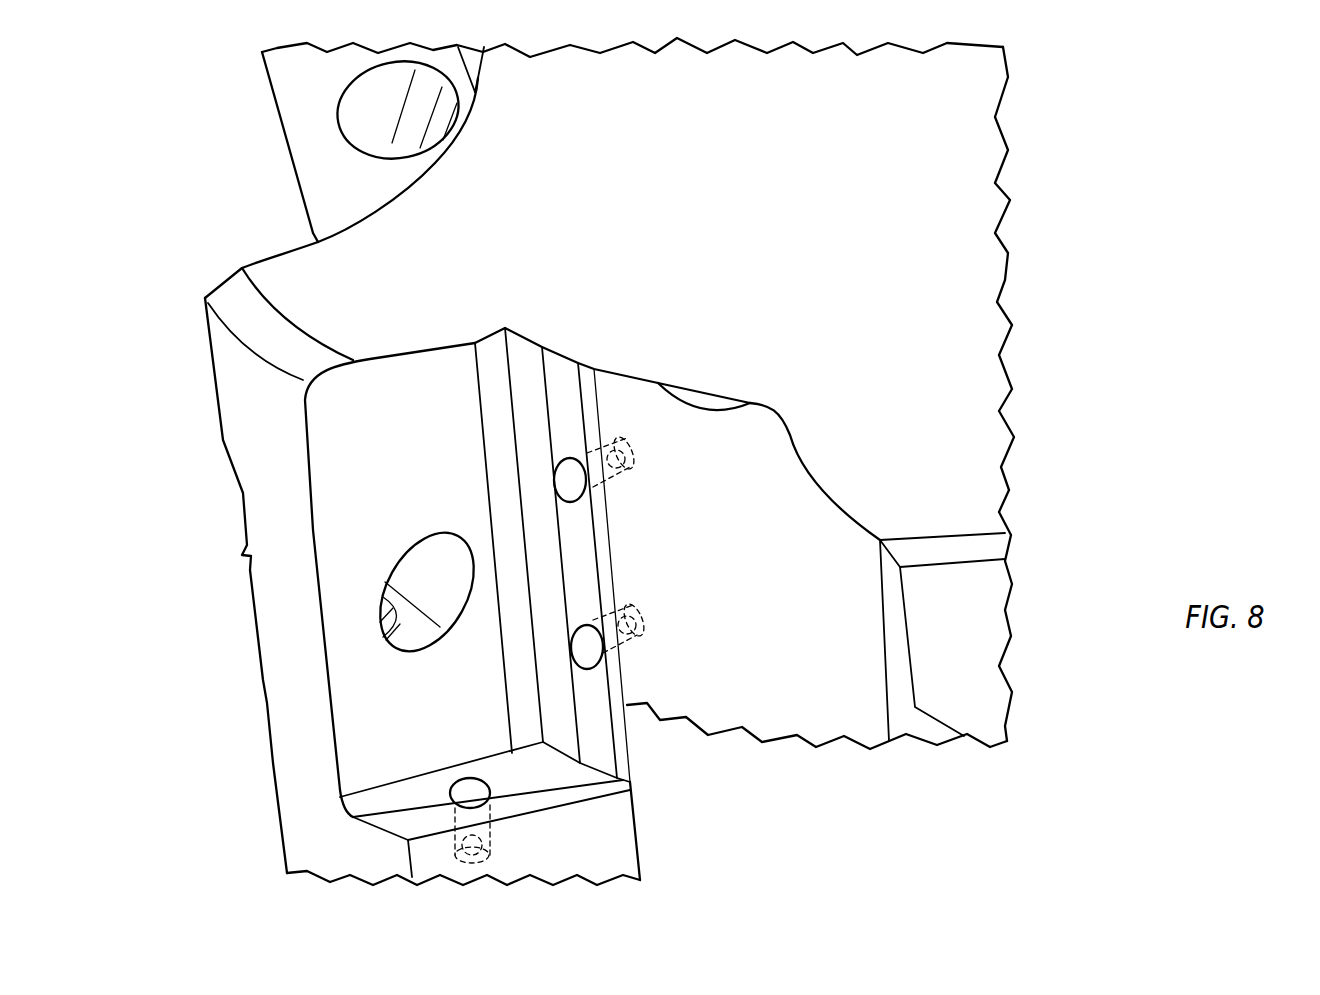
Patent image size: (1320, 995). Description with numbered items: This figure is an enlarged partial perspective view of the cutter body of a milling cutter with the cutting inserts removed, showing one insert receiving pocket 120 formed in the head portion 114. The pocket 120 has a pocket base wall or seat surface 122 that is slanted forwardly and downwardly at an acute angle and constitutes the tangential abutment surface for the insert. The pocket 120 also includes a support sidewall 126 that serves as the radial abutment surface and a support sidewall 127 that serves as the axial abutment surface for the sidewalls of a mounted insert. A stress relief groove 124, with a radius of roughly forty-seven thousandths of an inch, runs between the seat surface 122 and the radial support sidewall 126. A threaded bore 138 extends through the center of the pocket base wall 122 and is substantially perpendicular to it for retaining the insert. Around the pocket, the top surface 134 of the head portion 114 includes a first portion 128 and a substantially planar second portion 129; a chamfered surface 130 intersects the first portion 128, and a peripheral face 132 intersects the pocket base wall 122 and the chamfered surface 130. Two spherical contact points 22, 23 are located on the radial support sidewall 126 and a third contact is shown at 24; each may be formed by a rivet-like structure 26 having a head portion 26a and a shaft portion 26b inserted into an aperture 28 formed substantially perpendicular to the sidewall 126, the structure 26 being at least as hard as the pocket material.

The head portion 114 is at (576, 446).
The insert receiving pocket 120 is at (437, 466).
The pocket base wall 122 is at (330, 188).
The stress relief groove 124 is at (527, 367).
The support sidewall 126 is at (587, 713).
The support sidewall 127 is at (377, 800).
The first portion 128 is at (297, 278).
The second portion 129 is at (780, 160).
The chamfered surface 130 is at (233, 308).
The peripheral face 132 is at (227, 378).
The top surface 134 is at (660, 120).
The threaded bore 138 is at (352, 102).
The spherical contact point 22 is at (560, 480).
The spherical contact point 23 is at (573, 653).
The third hole 24 is at (463, 782).
The rivet-like structure 26 is at (537, 628).
The head portion 26a is at (485, 633).
The shaft portion 26b is at (537, 645).
The aperture 28 is at (613, 477).